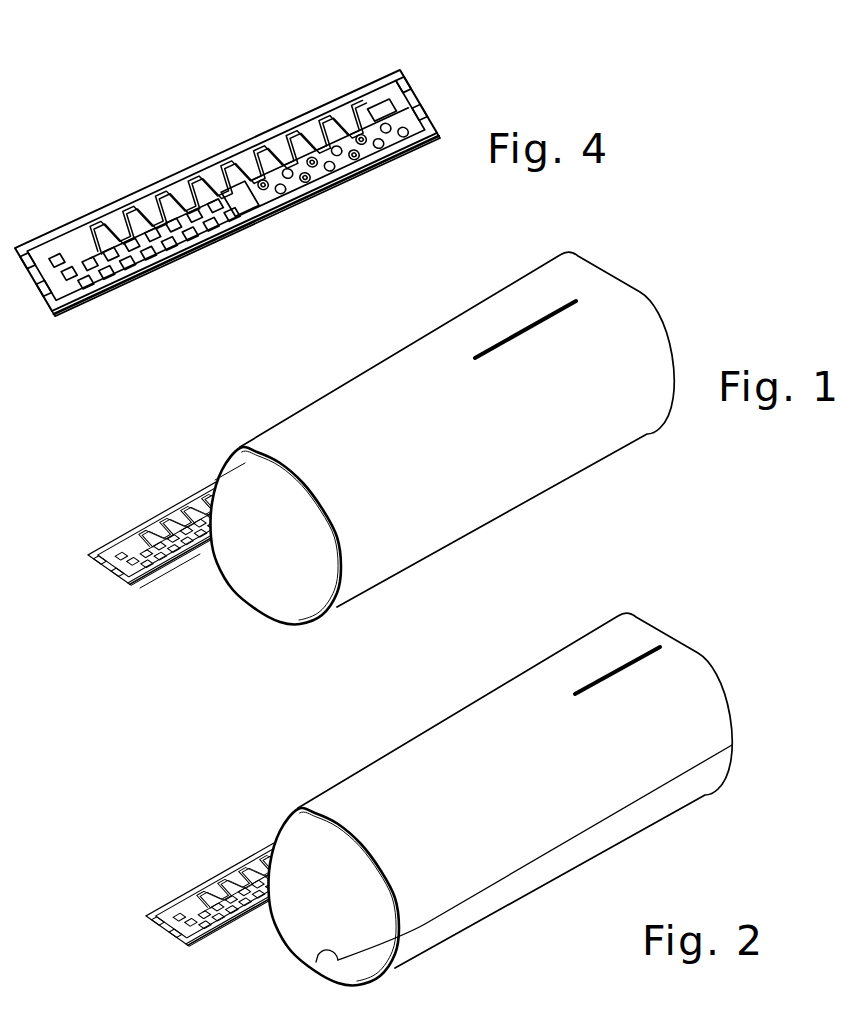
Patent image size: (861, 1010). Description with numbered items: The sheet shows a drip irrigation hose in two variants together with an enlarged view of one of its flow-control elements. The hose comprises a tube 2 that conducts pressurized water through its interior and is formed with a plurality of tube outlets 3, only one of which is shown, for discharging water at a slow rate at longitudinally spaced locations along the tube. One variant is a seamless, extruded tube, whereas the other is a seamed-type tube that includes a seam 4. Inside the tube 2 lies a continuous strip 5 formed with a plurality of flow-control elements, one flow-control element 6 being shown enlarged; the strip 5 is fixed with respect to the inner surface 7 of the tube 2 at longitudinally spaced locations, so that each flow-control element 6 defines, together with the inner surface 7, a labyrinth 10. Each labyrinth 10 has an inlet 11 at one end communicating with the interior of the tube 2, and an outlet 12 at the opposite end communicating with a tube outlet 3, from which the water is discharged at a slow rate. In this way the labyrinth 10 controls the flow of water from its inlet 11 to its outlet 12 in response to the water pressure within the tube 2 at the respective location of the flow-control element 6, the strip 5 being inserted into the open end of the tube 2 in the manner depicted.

In FIG. 1, the tube 2 is at (337, 407).
In FIG. 2, the tube 2 is at (382, 773).
In FIG. 1, the tube outlet 3 is at (513, 327).
In FIG. 2, the tube outlet 3 is at (627, 663).
In FIG. 2, the seam 4 is at (325, 960).
In FIG. 4, the continuous strip 5 is at (302, 104).
In FIG. 1, the continuous strip 5 is at (112, 584).
In FIG. 2, the continuous strip 5 is at (170, 948).
In FIG. 1, the flow-control element 6 is at (183, 553).
In FIG. 1, the inner surface 7 is at (223, 468).
In FIG. 4, the labyrinth 10 is at (210, 160).
In FIG. 4, the inlet 11 is at (167, 257).
In FIG. 4, the outlet 12 is at (375, 143).